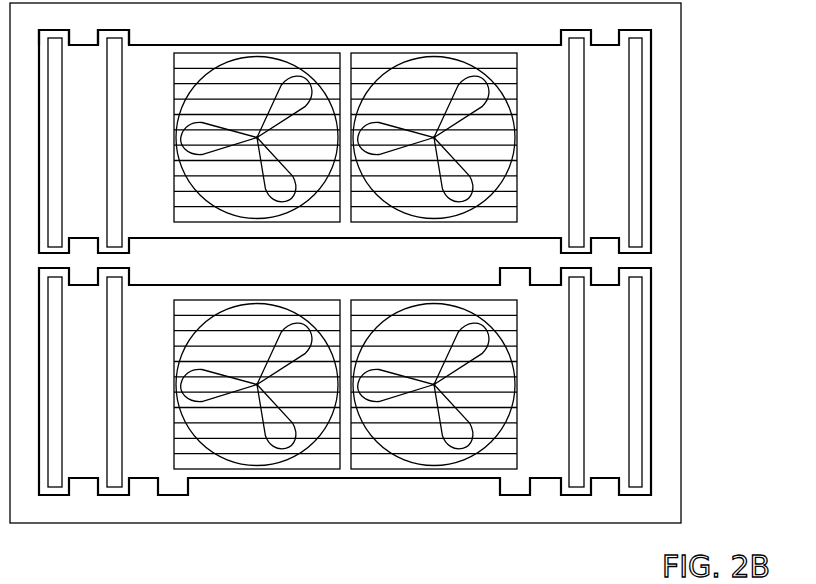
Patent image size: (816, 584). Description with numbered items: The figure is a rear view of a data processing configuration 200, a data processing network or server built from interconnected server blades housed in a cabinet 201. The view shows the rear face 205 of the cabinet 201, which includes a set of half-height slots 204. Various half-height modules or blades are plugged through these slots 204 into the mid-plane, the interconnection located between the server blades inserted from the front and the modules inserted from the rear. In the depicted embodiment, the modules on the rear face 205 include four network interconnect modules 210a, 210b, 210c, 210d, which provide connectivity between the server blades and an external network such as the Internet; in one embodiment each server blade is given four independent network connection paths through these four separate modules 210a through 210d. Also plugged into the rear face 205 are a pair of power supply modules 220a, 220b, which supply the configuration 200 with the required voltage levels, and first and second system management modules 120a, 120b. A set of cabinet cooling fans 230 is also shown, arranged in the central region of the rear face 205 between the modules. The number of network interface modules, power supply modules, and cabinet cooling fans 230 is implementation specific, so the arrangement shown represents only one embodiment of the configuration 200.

The data processing configuration 200 is at (732, 172).
The cabinet 201 is at (681, 313).
The half-height slots 204 is at (68, 40).
The rear face 205 is at (669, 518).
The power supply module 220a is at (55, 124).
The network interconnect module 210a is at (112, 124).
The network interconnect module 210b is at (112, 340).
The network interconnect module 210c is at (576, 107).
The network interconnect module 210d is at (576, 338).
The power supply module 220b is at (55, 340).
The first system management module 120a is at (635, 107).
The second system management module 120b is at (635, 338).
The cabinet cooling fans 230 is at (306, 302).